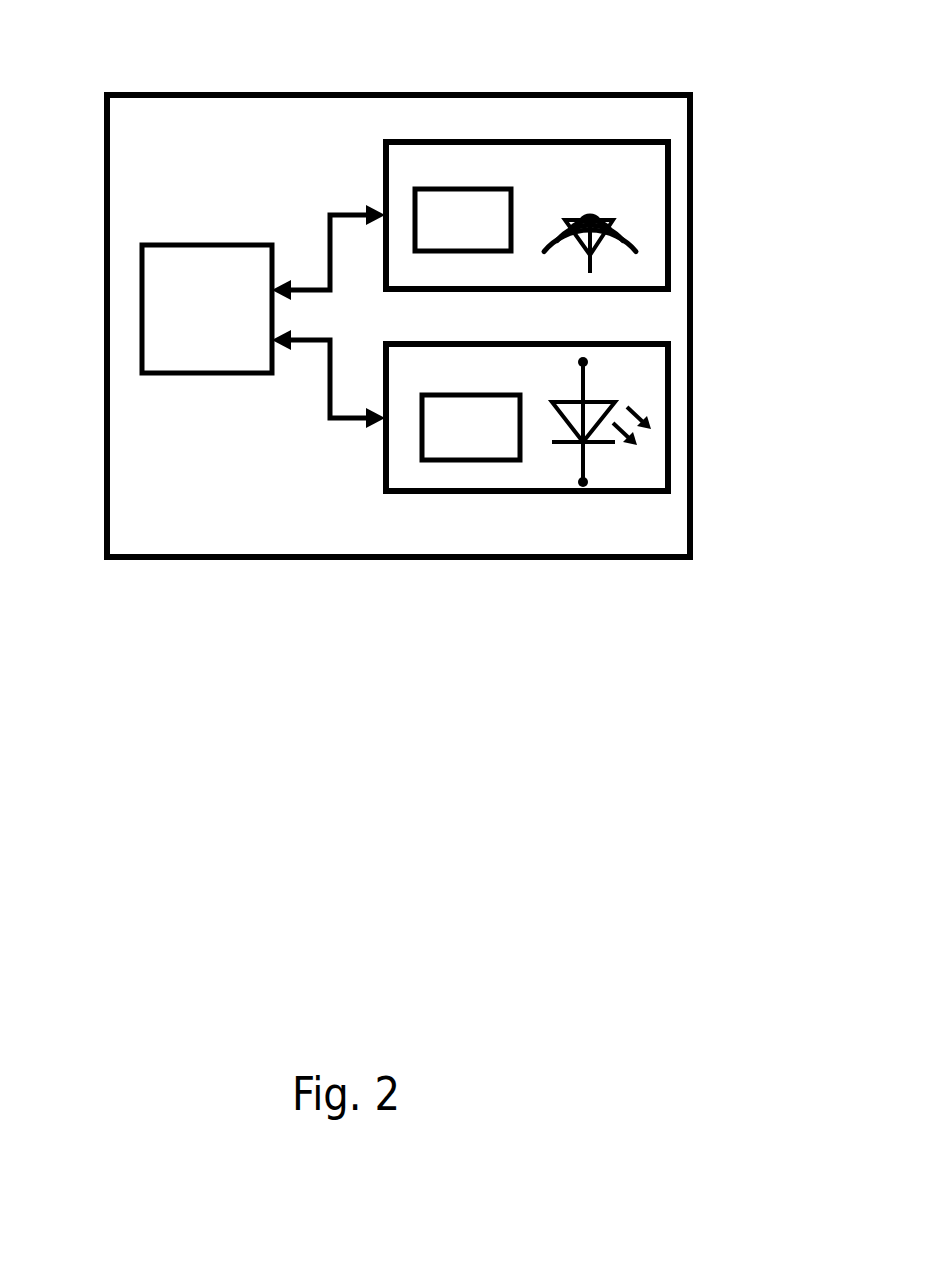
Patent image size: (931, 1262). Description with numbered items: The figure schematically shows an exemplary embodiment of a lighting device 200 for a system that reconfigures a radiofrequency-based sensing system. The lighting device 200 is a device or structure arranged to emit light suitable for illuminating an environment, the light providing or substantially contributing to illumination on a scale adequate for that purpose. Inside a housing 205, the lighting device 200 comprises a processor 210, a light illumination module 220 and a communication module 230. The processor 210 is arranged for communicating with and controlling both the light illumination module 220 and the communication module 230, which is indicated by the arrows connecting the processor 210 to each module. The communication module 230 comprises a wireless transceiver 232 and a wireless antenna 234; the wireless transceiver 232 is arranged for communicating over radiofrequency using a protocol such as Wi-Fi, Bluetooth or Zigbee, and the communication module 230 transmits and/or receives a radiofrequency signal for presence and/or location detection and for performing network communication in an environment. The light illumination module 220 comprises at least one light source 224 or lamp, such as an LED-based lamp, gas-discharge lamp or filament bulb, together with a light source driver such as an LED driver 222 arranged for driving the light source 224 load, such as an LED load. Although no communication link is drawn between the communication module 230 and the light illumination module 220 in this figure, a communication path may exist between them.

The lighting device 200 is at (382, 850).
The housing 205 is at (418, 560).
The processor 210 is at (172, 375).
The light illumination module 220 is at (668, 453).
The LED driver 222 is at (445, 445).
The light source 224 is at (587, 452).
The communication module 230 is at (668, 210).
The wireless transceiver 232 is at (472, 163).
The wireless antenna 234 is at (563, 158).